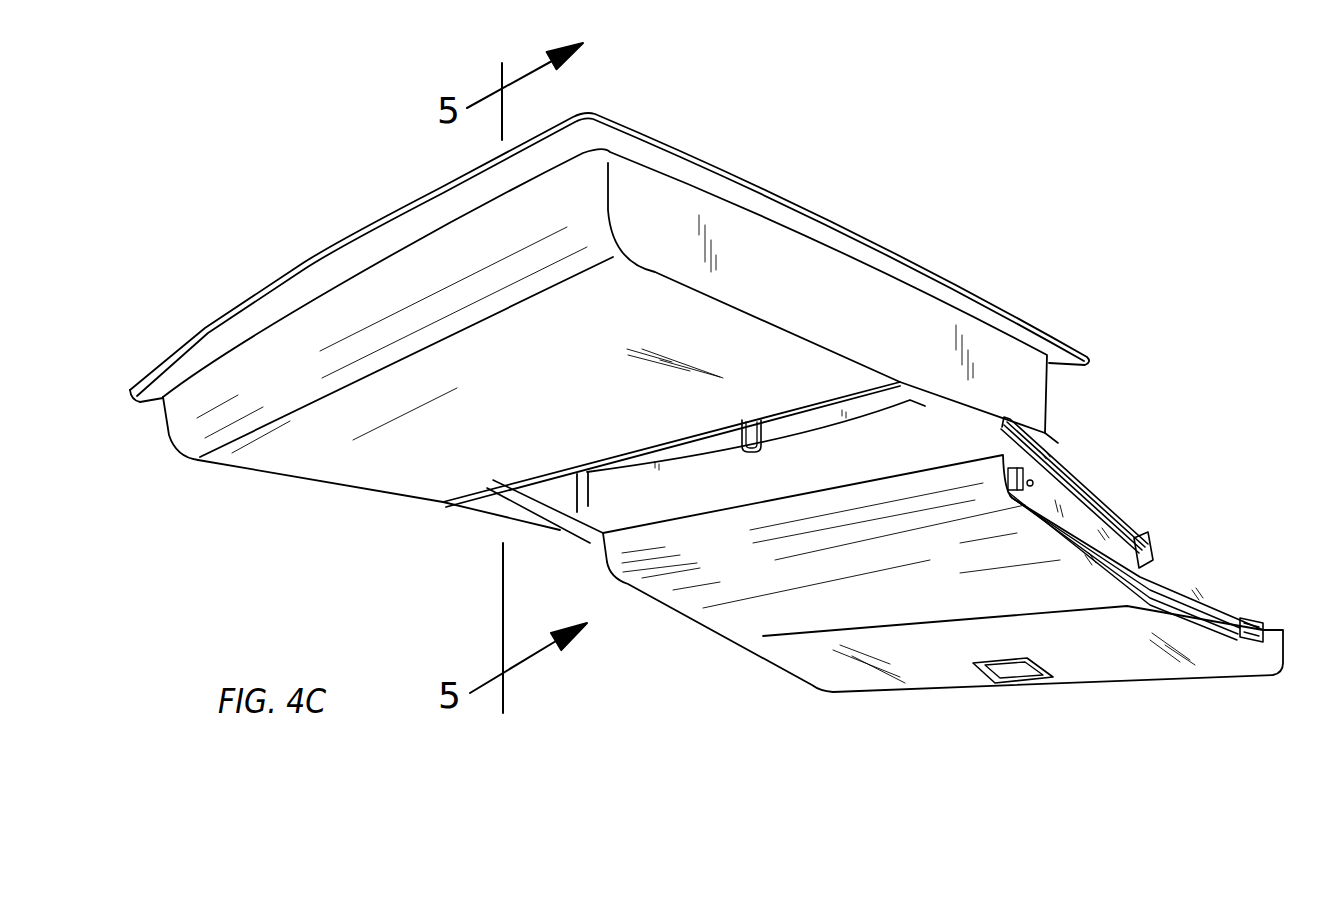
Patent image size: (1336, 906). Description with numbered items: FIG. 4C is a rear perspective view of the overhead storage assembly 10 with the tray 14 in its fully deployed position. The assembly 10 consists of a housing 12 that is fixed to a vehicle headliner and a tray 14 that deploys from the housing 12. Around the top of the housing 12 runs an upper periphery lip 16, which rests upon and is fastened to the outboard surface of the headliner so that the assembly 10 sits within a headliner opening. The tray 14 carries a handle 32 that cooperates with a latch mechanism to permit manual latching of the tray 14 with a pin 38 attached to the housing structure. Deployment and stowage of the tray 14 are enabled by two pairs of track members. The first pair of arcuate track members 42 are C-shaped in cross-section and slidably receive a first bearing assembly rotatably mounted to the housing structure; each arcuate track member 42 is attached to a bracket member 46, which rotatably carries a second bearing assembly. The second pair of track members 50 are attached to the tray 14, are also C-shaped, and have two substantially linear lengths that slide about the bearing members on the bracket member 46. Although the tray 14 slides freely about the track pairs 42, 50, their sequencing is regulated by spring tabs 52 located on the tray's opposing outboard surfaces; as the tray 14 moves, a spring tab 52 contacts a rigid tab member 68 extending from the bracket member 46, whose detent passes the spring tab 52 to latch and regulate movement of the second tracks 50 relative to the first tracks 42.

The overhead storage assembly 10 is at (258, 133).
The housing 12 is at (505, 411).
The tray 14 is at (757, 589).
The upper periphery lip 16 is at (795, 217).
The handle 32 is at (1013, 676).
The pin 38 is at (753, 455).
The first pair of arcuate track members 42 is at (547, 503).
The bracket member 46 is at (1070, 507).
The second pair of track members 50 is at (1200, 600).
The spring tab 52 is at (1256, 614).
The rigid tab member 68 is at (1152, 532).